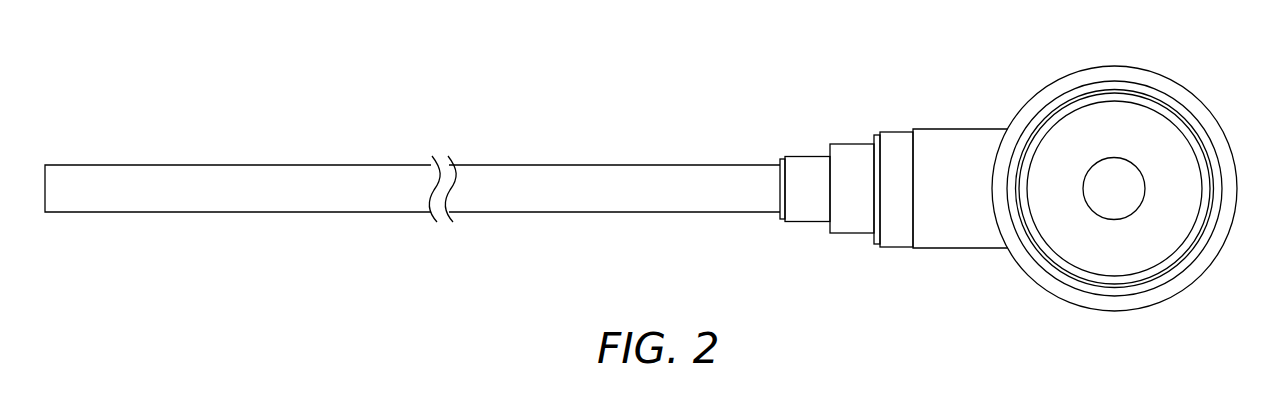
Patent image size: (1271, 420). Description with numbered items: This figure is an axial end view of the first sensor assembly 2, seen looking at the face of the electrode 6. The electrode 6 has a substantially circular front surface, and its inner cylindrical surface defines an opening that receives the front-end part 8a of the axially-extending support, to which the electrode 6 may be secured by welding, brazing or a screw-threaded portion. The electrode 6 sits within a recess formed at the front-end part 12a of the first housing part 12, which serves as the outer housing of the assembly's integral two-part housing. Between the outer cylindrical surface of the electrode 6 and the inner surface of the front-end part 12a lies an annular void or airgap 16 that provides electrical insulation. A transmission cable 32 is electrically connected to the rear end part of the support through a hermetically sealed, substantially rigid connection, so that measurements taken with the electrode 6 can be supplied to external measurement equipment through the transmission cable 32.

The first sensor assembly 2 is at (943, 281).
The transmission cable 32 is at (617, 103).
The first housing part 12 is at (1212, 123).
The front-end part of the first housing part 12a is at (1072, 97).
The annular void or airgap 16 is at (1141, 100).
The electrode 6 is at (1167, 230).
The front-end part of the support 8a is at (1115, 209).